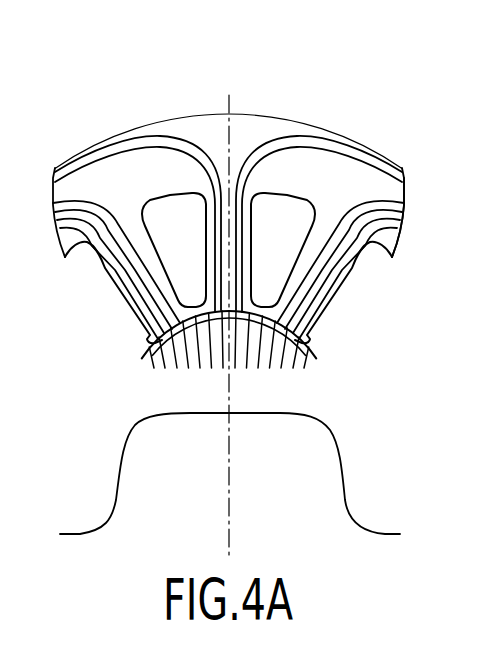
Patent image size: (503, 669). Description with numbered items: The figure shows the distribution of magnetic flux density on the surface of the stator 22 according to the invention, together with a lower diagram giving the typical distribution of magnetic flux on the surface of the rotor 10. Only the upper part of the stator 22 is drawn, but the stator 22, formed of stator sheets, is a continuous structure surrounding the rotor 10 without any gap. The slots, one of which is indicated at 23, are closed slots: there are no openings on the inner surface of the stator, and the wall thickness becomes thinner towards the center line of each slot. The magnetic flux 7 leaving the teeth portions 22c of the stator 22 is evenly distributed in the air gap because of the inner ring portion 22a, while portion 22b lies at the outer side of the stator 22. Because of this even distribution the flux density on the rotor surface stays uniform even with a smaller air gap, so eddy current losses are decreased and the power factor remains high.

The stator 22 is at (373, 140).
The inner ring portion 22a is at (297, 322).
The outer edge portion of pole segment 22b is at (377, 191).
The teeth portions 22c is at (137, 277).
The window opening 23 is at (172, 212).
The magnetic flux 7 is at (316, 138).
The rotor 10 is at (280, 342).